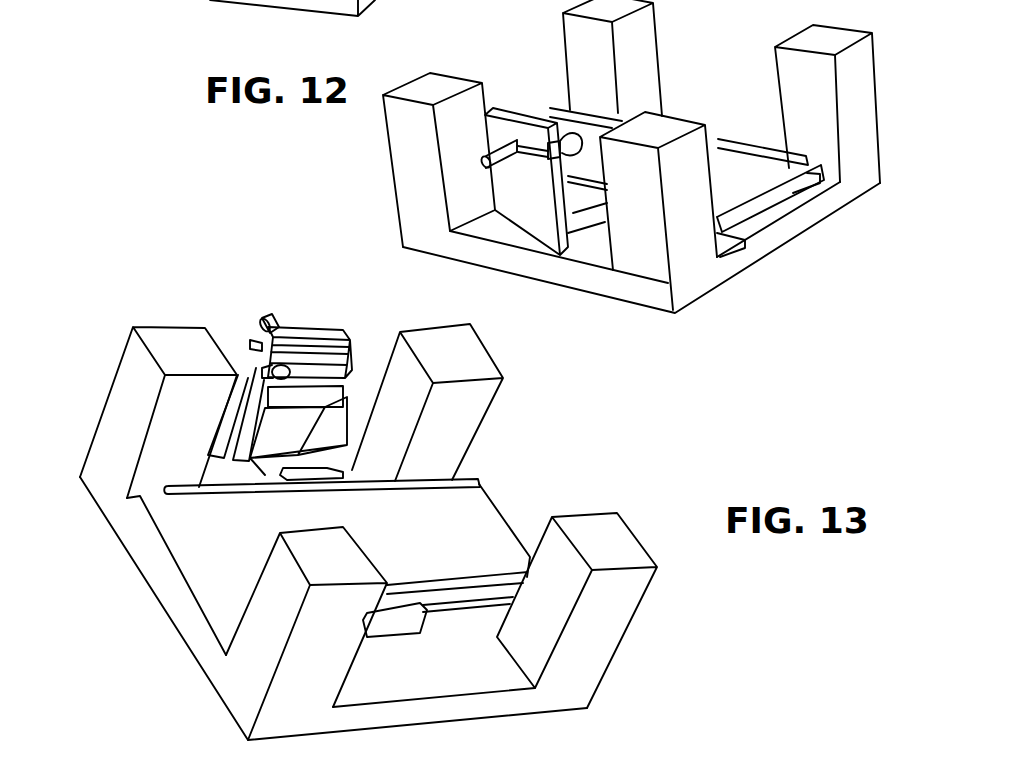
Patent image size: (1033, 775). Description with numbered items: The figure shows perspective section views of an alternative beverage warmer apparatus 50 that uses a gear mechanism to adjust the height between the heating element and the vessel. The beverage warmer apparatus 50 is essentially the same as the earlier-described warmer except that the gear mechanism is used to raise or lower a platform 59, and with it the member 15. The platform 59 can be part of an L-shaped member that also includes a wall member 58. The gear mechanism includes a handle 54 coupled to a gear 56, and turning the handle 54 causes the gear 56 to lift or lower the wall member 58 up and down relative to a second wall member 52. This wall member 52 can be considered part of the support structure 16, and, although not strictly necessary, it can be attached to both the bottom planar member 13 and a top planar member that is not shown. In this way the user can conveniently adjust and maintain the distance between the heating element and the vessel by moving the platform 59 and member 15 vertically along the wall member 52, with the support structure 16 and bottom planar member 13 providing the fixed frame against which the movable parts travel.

In FIG. 12, the bottom planar member 13 is at (462, 259).
In FIG. 12, the member 15 is at (732, 194).
In FIG. 13, the member 15 is at (442, 547).
In FIG. 12, the support structure 16 is at (420, 102).
In FIG. 13, the support structure 16 is at (165, 364).
In FIG. 12, the beverage warmer apparatus 50 is at (253, 156).
In FIG. 13, the beverage warmer apparatus 50 is at (778, 585).
In FIG. 12, the wall member 52 is at (512, 232).
In FIG. 13, the wall member 52 is at (337, 330).
In FIG. 12, the handle 54 is at (484, 160).
In FIG. 13, the handle 54 is at (267, 313).
In FIG. 12, the gear 56 is at (571, 134).
In FIG. 13, the gear 56 is at (272, 372).
In FIG. 13, the wall member 58 is at (270, 446).
In FIG. 12, the platform 59 is at (582, 220).
In FIG. 13, the platform 59 is at (268, 468).